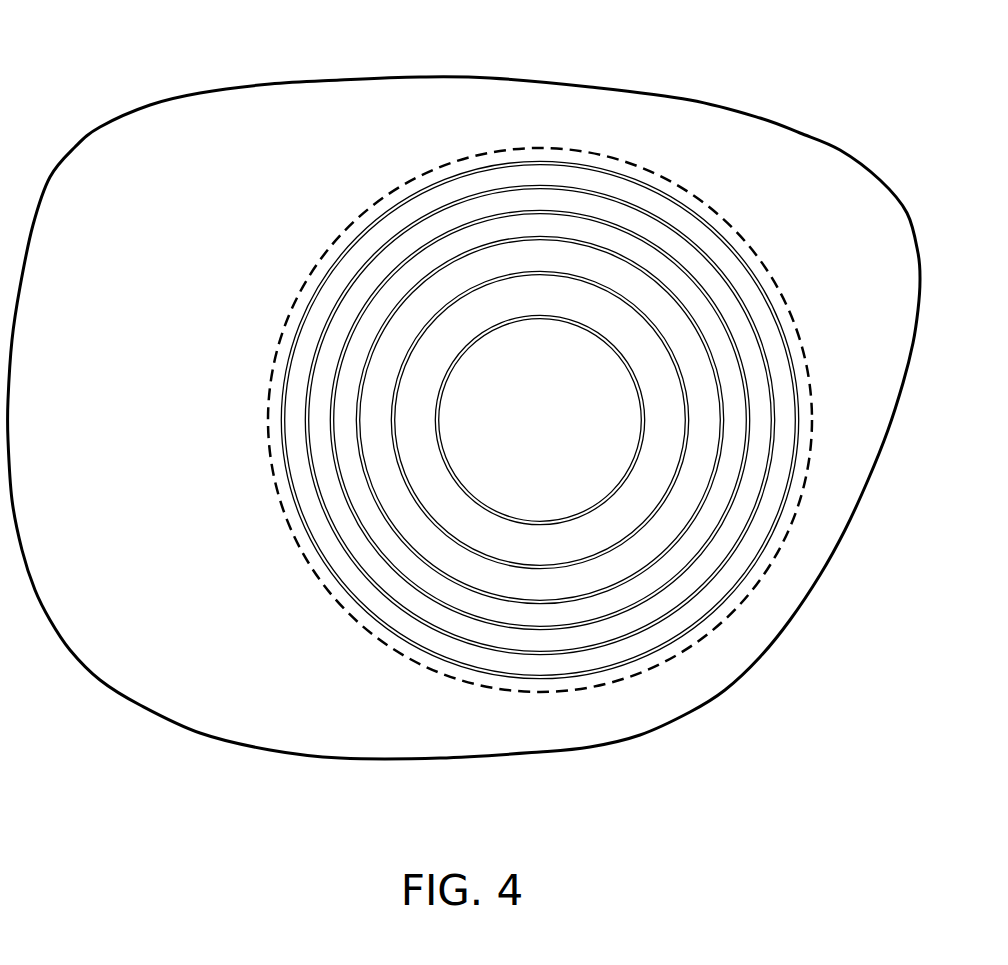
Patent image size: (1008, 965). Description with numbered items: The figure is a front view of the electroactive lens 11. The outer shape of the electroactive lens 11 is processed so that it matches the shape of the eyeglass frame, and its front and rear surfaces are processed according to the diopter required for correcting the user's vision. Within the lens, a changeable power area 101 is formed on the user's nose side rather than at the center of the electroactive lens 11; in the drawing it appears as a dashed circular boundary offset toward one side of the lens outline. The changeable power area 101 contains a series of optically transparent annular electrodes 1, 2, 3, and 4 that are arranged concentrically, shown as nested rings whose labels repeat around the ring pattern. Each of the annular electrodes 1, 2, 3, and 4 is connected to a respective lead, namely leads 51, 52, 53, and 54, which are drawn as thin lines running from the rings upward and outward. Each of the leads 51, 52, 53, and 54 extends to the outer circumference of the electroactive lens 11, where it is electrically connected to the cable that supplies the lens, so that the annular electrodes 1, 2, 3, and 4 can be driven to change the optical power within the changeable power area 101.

The electroactive lens 11 is at (97, 44).
The changeable power area 101 is at (698, 642).
The lead 51 is at (472, 283).
The lead 52 is at (605, 287).
The lead 53 is at (522, 312).
The lead 54 is at (558, 317).
The annular electrode 1 is at (688, 382).
The annular electrode 2 is at (682, 385).
The annular electrode 3 is at (644, 388).
The annular electrode 4 is at (639, 401).